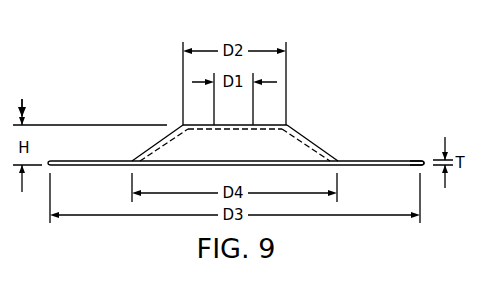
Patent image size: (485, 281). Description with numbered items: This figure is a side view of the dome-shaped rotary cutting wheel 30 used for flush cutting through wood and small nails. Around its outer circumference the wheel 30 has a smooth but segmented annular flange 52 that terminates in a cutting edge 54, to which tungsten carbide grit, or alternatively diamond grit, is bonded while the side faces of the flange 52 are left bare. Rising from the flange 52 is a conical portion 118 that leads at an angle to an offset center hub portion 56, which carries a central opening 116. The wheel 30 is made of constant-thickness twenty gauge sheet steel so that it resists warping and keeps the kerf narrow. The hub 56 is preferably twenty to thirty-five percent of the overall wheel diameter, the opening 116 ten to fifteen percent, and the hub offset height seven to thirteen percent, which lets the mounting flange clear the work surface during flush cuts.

The rotary cutting wheel 30 is at (374, 51).
The annular flange 52 is at (361, 167).
The cutting edge 54 is at (423, 159).
The center hub portion 56 is at (268, 125).
The opening 116 is at (230, 124).
The conical portion 118 is at (307, 140).